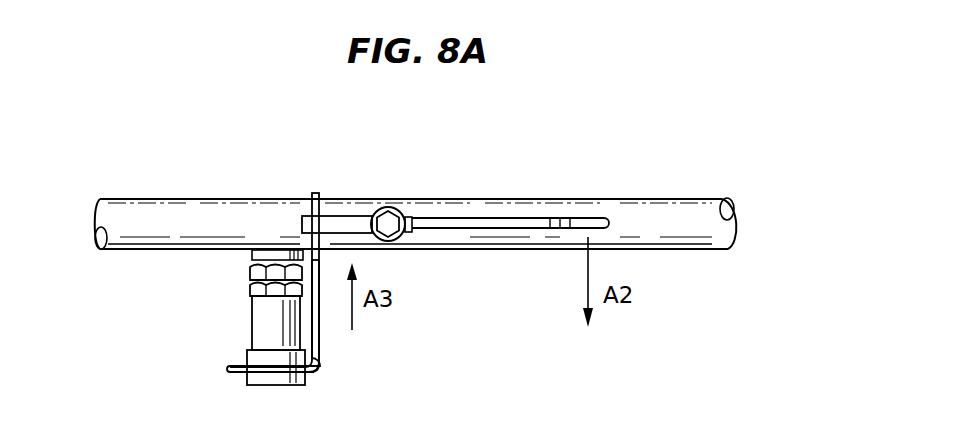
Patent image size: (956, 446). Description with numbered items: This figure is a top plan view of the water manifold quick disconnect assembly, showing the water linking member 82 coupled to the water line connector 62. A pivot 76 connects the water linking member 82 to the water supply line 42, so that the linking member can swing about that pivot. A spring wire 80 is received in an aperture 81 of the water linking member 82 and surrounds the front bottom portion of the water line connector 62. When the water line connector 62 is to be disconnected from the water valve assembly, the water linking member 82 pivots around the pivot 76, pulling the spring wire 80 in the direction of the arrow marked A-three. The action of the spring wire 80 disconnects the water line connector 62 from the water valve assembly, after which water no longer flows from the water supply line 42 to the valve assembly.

The water supply line 42 is at (152, 198).
The aperture 81 is at (312, 223).
The pivot 76 is at (380, 207).
The water linking member 82 is at (421, 216).
The water line connector 62 is at (250, 292).
The spring wire 80 is at (320, 365).